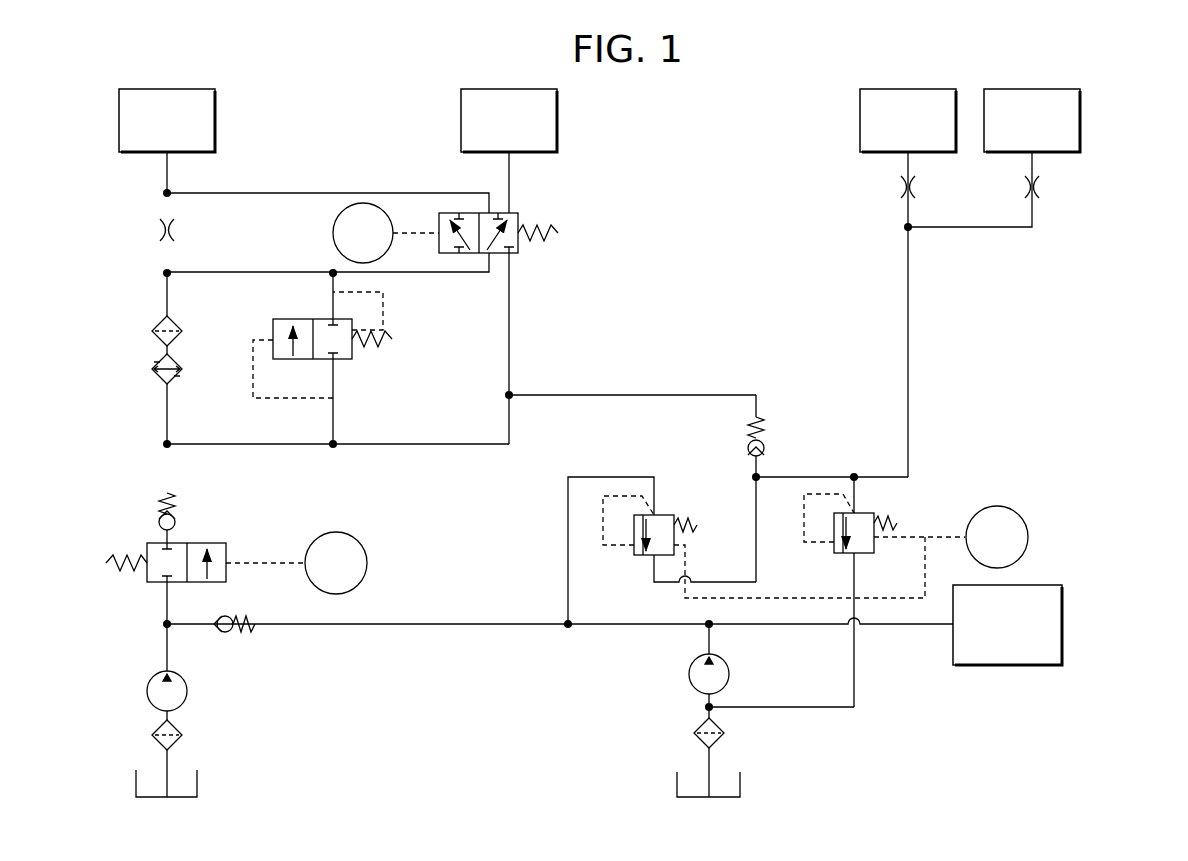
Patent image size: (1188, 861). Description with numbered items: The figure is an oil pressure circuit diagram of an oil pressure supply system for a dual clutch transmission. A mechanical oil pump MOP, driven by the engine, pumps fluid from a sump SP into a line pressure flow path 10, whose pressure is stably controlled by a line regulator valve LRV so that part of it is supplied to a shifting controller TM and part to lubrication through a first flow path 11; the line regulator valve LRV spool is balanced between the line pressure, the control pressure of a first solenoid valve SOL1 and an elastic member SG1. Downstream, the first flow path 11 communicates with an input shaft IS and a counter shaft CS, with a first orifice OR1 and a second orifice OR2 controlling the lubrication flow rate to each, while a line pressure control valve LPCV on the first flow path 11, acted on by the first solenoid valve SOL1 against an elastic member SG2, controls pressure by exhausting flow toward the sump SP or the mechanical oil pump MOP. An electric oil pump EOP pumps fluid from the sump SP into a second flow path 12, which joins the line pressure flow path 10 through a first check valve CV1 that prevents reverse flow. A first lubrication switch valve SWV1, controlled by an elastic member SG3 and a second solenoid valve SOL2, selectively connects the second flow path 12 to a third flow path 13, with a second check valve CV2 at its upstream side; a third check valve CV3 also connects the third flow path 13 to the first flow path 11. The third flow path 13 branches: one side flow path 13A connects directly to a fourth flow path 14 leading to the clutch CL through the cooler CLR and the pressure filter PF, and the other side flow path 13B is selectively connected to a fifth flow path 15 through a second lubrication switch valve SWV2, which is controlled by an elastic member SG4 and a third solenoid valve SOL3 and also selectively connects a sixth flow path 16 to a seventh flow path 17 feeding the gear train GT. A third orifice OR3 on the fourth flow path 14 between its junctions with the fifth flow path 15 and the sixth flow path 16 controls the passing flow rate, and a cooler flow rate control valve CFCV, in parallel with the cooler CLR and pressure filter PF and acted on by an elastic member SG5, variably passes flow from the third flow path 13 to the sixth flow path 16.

The clutch CL is at (215, 120).
The gear train GT is at (557, 120).
The input shaft IS is at (860, 120).
The counter shaft CS is at (1080, 120).
The shifting controller TM is at (1062, 628).
The first orifice OR1 is at (898, 187).
The second orifice OR2 is at (1042, 187).
The third orifice OR3 is at (180, 230).
The pressure filter PF is at (156, 320).
The cooler CLR is at (150, 370).
The electric oil pump EOP is at (145, 692).
The mechanical oil pump MOP is at (686, 682).
The sump SP is at (197, 780).
The second lubrication switch valve SWV2 is at (534, 230).
The first lubrication switch valve SWV1 is at (181, 551).
The first solenoid valve SOL1 is at (997, 537).
The second solenoid valve SOL2 is at (296, 563).
The third solenoid valve SOL3 is at (386, 233).
The cooler flow rate control valve CFCV is at (375, 353).
The line regulator valve LRV is at (764, 515).
The line pressure control valve LPCV is at (894, 534).
The first check valve CV1 is at (240, 636).
The second check valve CV2 is at (182, 512).
The third check valve CV3 is at (772, 438).
The elastic member SG1 is at (698, 527).
The elastic member SG2 is at (895, 527).
The elastic member SG3 is at (108, 568).
The elastic member SG4 is at (558, 240).
The elastic member SG5 is at (388, 345).
The line pressure flow path 10 is at (462, 624).
The first flow path 11 is at (908, 375).
The second flow path 12 is at (167, 645).
The third flow path 13 is at (409, 444).
The one side flow path 13A is at (167, 420).
The other side flow path 13B is at (509, 357).
The fourth flow path 14 is at (167, 178).
The fifth flow path 15 is at (344, 193).
The sixth flow path 16 is at (230, 273).
The seventh flow path 17 is at (509, 173).